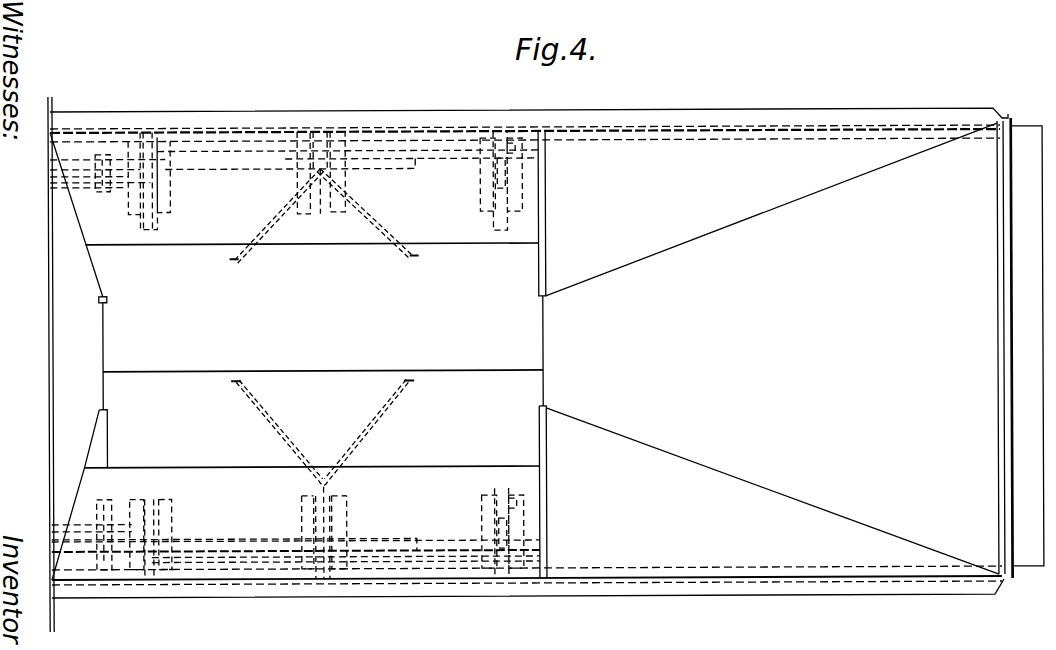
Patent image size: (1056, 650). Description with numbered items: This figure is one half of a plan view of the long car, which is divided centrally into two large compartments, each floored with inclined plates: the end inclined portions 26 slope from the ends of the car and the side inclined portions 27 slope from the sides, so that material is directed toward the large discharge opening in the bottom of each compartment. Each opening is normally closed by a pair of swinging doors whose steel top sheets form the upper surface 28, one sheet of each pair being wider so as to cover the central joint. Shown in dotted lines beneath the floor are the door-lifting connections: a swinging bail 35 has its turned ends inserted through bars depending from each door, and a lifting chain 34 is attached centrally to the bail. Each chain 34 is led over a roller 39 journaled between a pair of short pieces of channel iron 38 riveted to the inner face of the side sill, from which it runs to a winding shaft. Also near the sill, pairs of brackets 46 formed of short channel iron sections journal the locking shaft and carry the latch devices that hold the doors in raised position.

The end inclined portions of the floor 26 is at (63, 304).
The side inclined portions of the floor 27 is at (468, 233).
The upper surface of the door 28 is at (543, 380).
The lifting chain 34 is at (326, 491).
The swinging bail 35 is at (388, 236).
The short pieces of channel iron 38 is at (298, 218).
The roller 39 is at (315, 185).
The brackets 46 is at (128, 205).